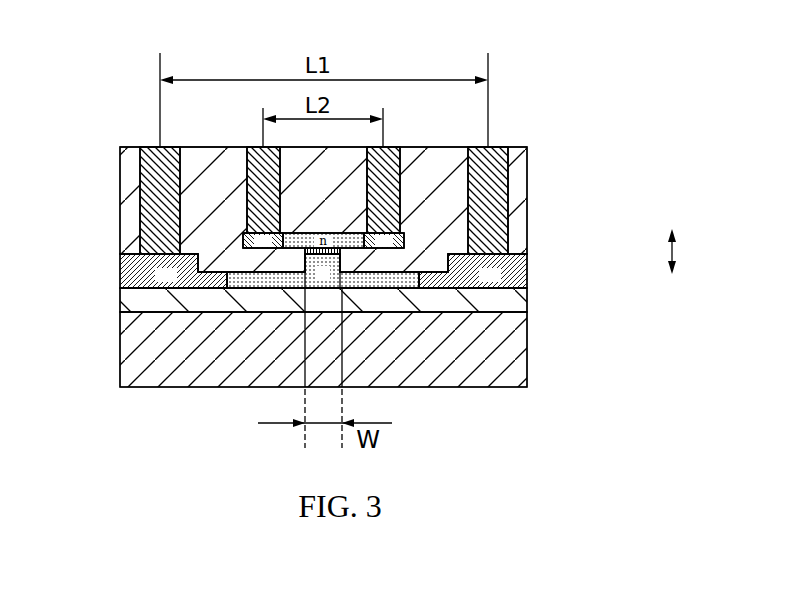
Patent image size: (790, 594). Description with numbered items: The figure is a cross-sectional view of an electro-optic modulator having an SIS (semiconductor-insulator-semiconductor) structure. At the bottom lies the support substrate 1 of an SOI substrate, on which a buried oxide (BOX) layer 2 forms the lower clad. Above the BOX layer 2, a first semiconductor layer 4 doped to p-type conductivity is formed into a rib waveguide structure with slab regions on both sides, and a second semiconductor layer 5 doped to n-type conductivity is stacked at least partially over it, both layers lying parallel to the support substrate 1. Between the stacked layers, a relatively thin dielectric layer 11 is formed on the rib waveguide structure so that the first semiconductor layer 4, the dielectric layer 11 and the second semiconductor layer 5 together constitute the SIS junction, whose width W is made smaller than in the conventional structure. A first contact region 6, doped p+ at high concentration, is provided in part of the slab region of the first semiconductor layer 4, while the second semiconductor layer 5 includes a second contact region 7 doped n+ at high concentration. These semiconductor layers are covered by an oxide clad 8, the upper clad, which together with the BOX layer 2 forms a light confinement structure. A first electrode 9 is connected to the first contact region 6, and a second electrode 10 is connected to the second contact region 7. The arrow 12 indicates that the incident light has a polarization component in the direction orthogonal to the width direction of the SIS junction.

The support substrate 1 is at (512, 363).
The buried oxide (BOX) layer 2 is at (503, 300).
The first semiconductor layer 4 is at (231, 278).
The second semiconductor layer 5 is at (394, 229).
The first contact region 6 is at (154, 274).
The second contact region 7 is at (245, 240).
The oxide clad 8 is at (432, 167).
The first electrode 9 is at (140, 148).
The second electrode 10 is at (383, 202).
The dielectric layer 11 is at (527, 260).
The arrow 12 is at (674, 252).